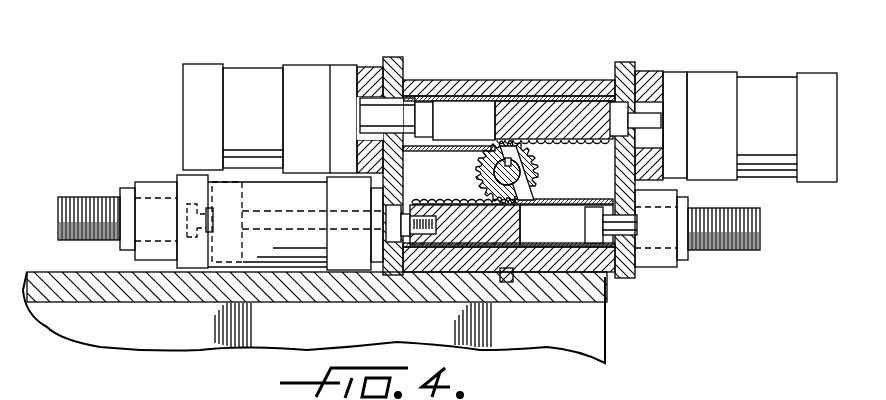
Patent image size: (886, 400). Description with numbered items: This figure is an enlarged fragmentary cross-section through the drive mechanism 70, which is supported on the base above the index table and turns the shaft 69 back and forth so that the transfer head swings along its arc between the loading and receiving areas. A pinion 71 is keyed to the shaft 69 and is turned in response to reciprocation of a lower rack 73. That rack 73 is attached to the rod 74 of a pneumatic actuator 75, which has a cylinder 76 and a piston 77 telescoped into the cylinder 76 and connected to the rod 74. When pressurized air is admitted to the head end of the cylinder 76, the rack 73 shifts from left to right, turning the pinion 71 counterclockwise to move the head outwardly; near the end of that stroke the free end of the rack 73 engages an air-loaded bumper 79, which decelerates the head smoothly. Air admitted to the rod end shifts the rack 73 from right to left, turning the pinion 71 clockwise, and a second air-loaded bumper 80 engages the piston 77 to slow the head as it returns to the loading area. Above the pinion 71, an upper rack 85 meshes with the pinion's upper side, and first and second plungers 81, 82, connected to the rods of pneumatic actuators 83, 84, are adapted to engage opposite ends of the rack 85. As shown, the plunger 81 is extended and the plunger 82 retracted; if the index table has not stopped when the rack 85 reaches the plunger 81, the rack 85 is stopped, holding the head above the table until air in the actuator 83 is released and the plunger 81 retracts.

The shaft 69 is at (477, 182).
The drive mechanism 70 is at (546, 75).
The pinion 71 is at (543, 177).
The rack 73 is at (520, 232).
The rod 74 is at (307, 203).
The pneumatic actuator 75 is at (270, 270).
The cylinder 76 is at (262, 187).
The piston 77 is at (220, 185).
The air-loaded bumper 79 is at (617, 237).
The air-loaded bumper 80 is at (197, 203).
The first plunger 81 is at (445, 99).
The second plunger 82 is at (640, 111).
The pneumatic actuator 83 is at (241, 77).
The pneumatic actuator 84 is at (760, 85).
The rack 85 is at (521, 103).